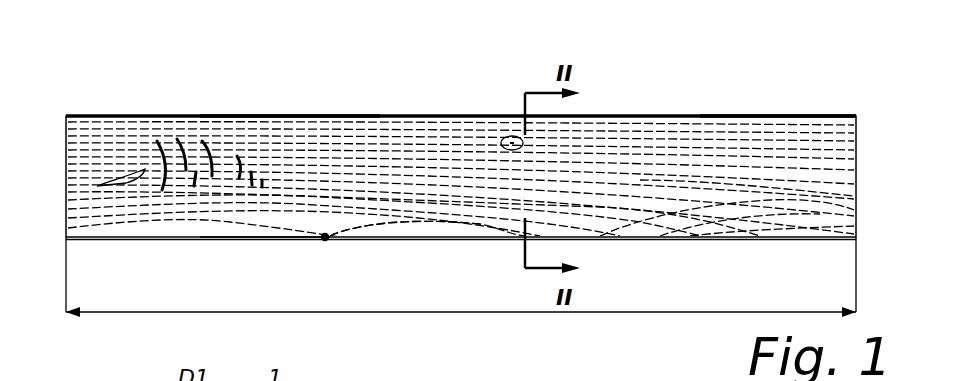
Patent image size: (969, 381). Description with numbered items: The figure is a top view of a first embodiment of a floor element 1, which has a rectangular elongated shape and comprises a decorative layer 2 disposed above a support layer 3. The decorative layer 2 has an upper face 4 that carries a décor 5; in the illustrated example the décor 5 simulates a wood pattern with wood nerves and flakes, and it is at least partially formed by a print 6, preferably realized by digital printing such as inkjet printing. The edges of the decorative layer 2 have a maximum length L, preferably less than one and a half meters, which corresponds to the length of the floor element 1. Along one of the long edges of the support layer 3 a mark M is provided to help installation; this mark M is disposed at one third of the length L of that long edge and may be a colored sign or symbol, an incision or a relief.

The floor element 1 is at (181, 76).
The decorative layer 2 is at (290, 122).
The support layer 3 is at (760, 116).
The upper face 4 is at (314, 234).
The décor 5 is at (432, 147).
The print 6 is at (378, 223).
The mark M is at (325, 240).
The length L is at (460, 312).